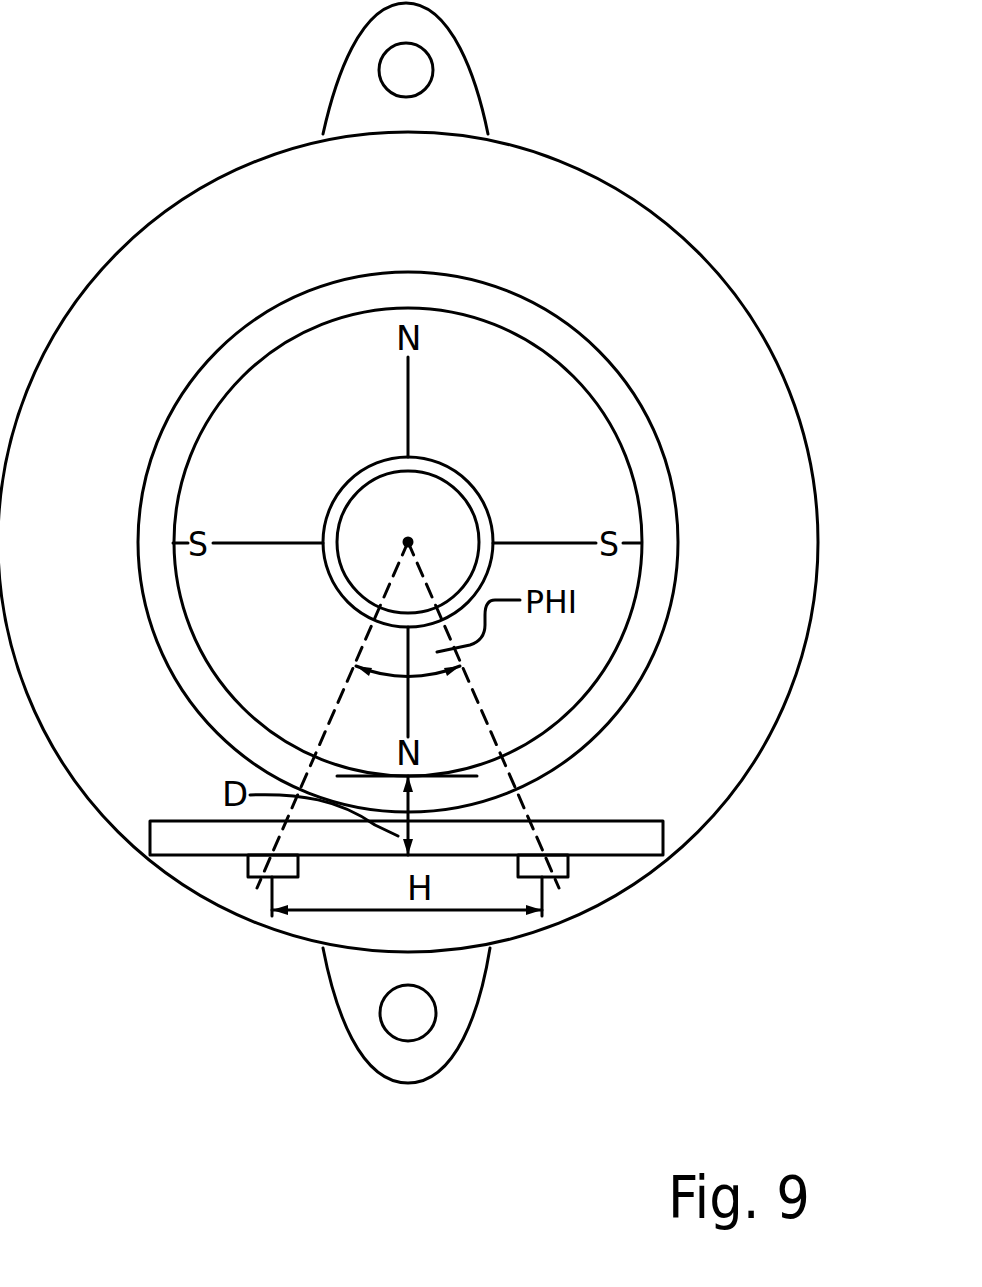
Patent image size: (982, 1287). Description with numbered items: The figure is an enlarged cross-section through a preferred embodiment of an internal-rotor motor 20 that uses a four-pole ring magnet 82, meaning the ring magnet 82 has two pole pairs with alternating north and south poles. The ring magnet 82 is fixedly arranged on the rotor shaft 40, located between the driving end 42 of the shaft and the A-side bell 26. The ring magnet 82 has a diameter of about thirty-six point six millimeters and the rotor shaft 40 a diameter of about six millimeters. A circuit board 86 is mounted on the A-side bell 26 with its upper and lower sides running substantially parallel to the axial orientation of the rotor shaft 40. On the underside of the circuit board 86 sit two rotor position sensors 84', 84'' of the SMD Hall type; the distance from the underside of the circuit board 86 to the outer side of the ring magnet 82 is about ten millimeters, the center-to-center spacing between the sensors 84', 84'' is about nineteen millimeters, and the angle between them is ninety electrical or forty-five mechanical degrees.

The internal-rotor motor 20 is at (250, 128).
The A-side bell 26 is at (533, 148).
The four-pole ring magnet 82 is at (562, 422).
The rotor shaft 40 is at (367, 478).
The driving end 42 is at (353, 558).
The circuit board 86 is at (665, 835).
The rotor position sensor 84' is at (184, 914).
The rotor position sensor 84'' is at (622, 914).